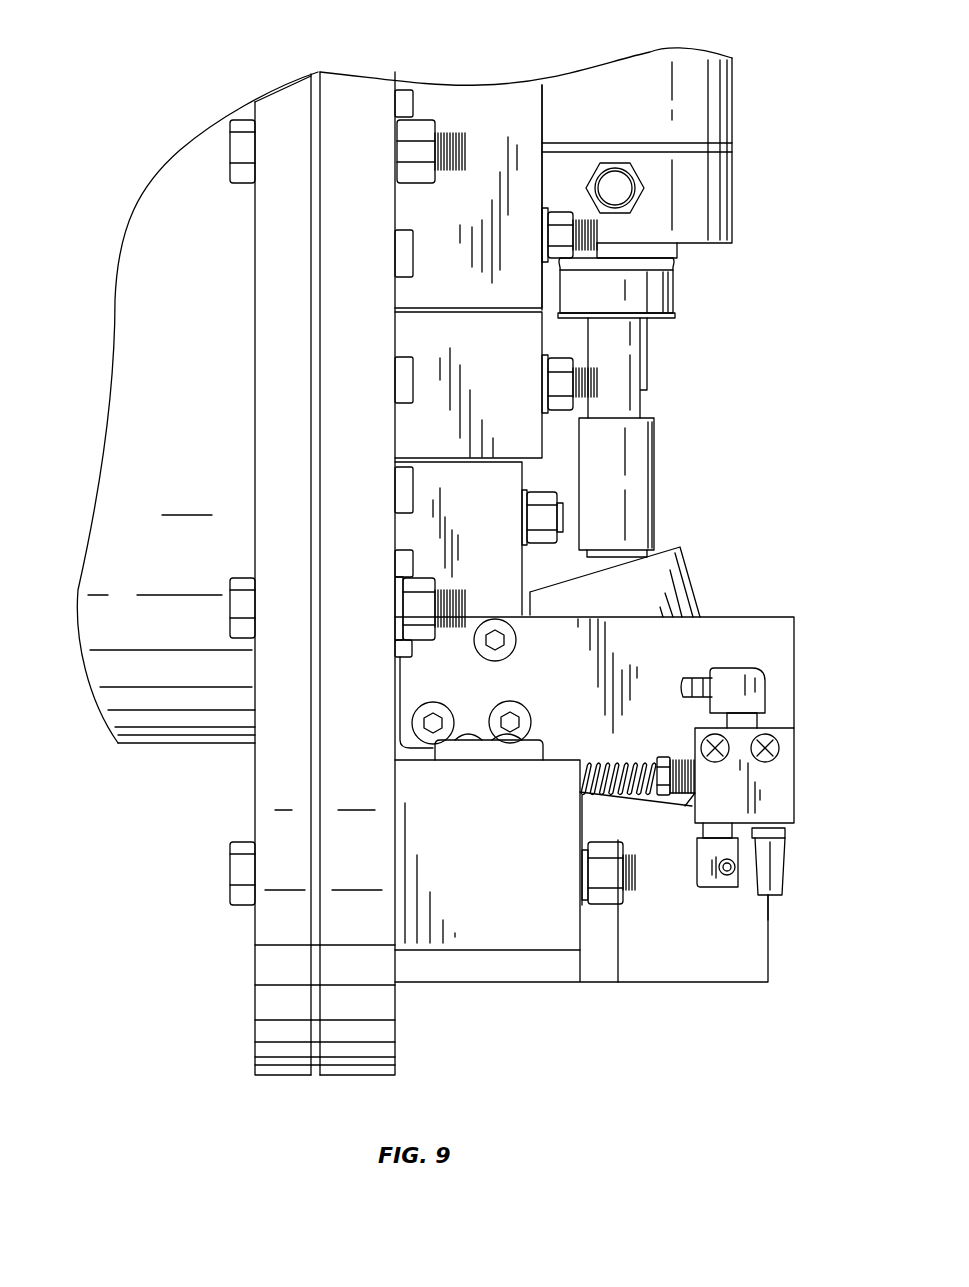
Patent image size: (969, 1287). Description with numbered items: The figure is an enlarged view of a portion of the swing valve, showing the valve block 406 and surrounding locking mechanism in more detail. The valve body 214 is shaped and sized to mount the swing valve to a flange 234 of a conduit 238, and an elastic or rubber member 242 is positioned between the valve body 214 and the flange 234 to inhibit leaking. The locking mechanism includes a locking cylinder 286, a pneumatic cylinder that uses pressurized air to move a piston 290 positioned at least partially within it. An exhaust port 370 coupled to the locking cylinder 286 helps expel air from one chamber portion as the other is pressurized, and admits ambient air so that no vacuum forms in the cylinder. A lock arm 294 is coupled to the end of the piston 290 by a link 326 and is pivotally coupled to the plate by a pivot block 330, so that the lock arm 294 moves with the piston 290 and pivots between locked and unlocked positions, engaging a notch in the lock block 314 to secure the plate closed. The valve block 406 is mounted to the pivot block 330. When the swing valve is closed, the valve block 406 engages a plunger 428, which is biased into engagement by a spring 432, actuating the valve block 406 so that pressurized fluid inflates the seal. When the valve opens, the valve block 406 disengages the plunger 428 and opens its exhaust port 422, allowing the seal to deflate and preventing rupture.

The valve body 214 is at (358, 88).
The flange 234 is at (283, 100).
The conduit 238 is at (155, 350).
The elastic or rubber member 242 is at (315, 72).
The locking cylinder 286 is at (718, 93).
The piston 290 is at (633, 352).
The lock arm 294 is at (658, 585).
The lock block 314 is at (485, 927).
The link 326 is at (648, 477).
The pivot block 330 is at (397, 537).
The exhaust port 370 is at (645, 173).
The valve block 406 is at (778, 775).
The exhaust port 422 is at (780, 858).
The plunger 428 is at (580, 793).
The spring 432 is at (642, 798).